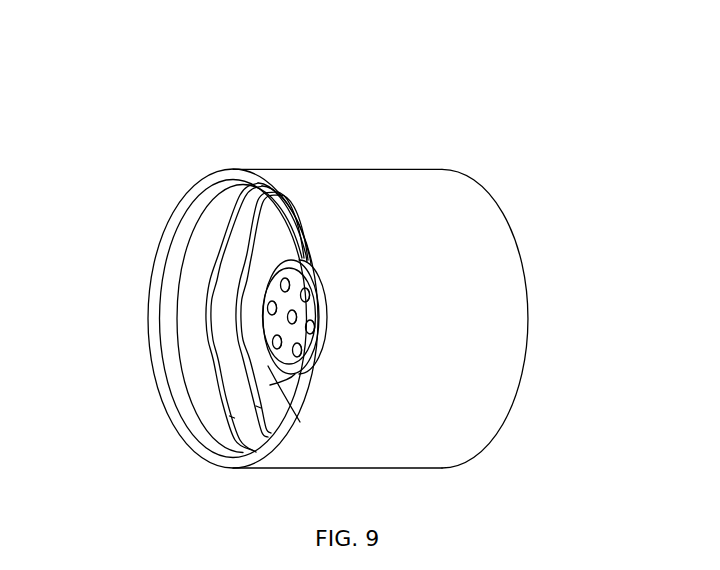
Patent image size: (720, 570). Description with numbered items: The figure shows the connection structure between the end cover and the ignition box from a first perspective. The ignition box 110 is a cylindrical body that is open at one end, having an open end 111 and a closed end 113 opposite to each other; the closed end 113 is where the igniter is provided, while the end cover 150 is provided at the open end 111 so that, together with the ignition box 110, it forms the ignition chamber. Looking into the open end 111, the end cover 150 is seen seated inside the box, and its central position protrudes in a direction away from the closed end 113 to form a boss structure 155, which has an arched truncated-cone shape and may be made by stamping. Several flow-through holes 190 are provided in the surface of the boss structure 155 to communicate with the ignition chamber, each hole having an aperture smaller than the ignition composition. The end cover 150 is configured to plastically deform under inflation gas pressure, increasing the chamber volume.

The ignition box 110 is at (375, 169).
The open end 111 is at (100, 313).
The closed end 113 is at (573, 289).
The end cover 150 is at (255, 312).
The boss structure 155 is at (287, 258).
The flow-through holes 190 is at (290, 318).